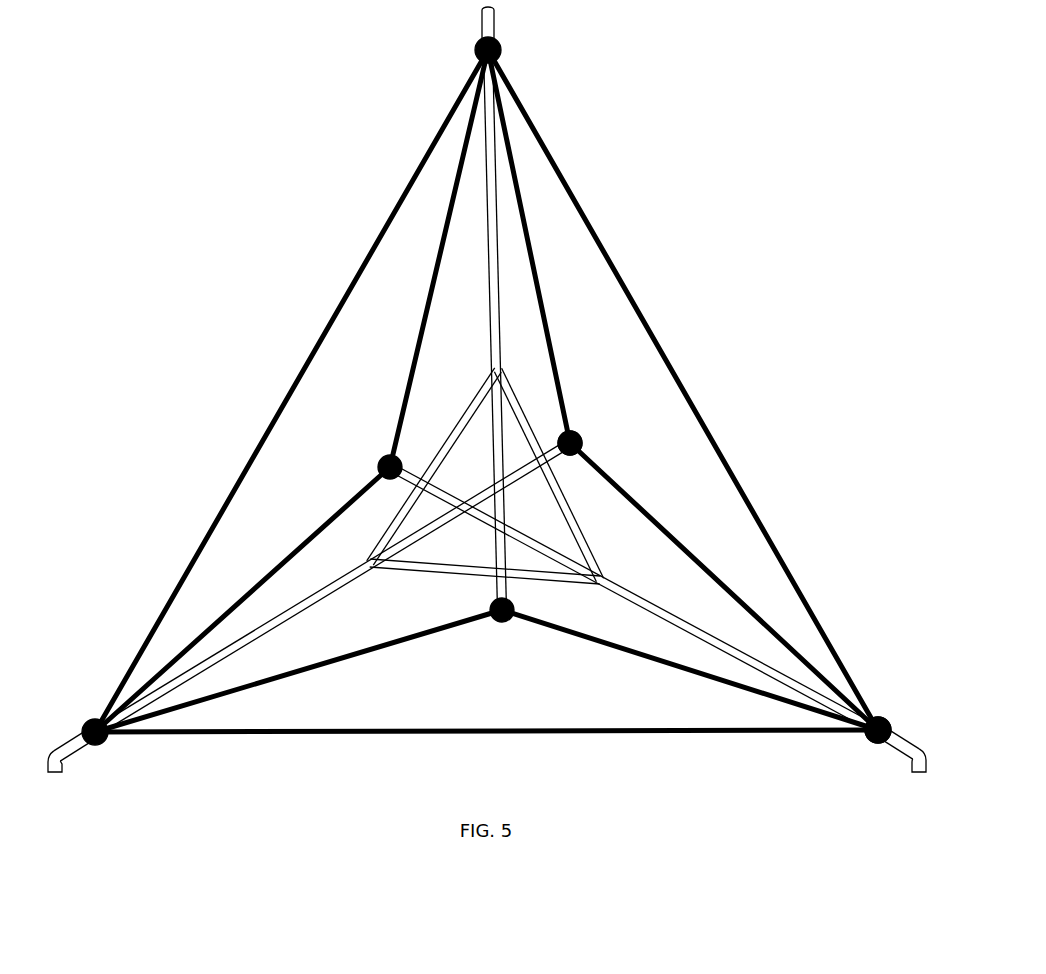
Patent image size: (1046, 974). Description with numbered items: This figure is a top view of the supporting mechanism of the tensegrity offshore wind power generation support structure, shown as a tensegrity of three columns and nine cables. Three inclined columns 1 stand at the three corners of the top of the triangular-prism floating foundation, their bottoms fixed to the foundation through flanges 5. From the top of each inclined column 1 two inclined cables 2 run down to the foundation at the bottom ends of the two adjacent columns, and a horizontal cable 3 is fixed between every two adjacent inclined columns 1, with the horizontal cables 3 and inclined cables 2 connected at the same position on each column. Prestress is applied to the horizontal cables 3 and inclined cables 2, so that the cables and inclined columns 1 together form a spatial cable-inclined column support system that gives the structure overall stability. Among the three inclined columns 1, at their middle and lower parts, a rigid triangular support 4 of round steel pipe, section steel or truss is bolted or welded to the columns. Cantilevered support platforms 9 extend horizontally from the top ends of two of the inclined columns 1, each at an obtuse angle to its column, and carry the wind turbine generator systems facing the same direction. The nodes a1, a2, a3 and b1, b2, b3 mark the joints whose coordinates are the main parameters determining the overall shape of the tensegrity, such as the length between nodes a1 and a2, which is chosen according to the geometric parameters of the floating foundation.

The inclined column 1 is at (660, 610).
The inclined cable 2 is at (345, 655).
The horizontal cable 3 is at (662, 343).
The rigid triangular support 4 is at (458, 425).
The flange 5 is at (572, 432).
The cantilevered support platform 9 is at (62, 768).
The node a1 is at (501, 624).
The node a2 is at (587, 439).
The node a3 is at (374, 458).
The node b1 is at (507, 50).
The node b2 is at (83, 717).
The node b3 is at (871, 749).